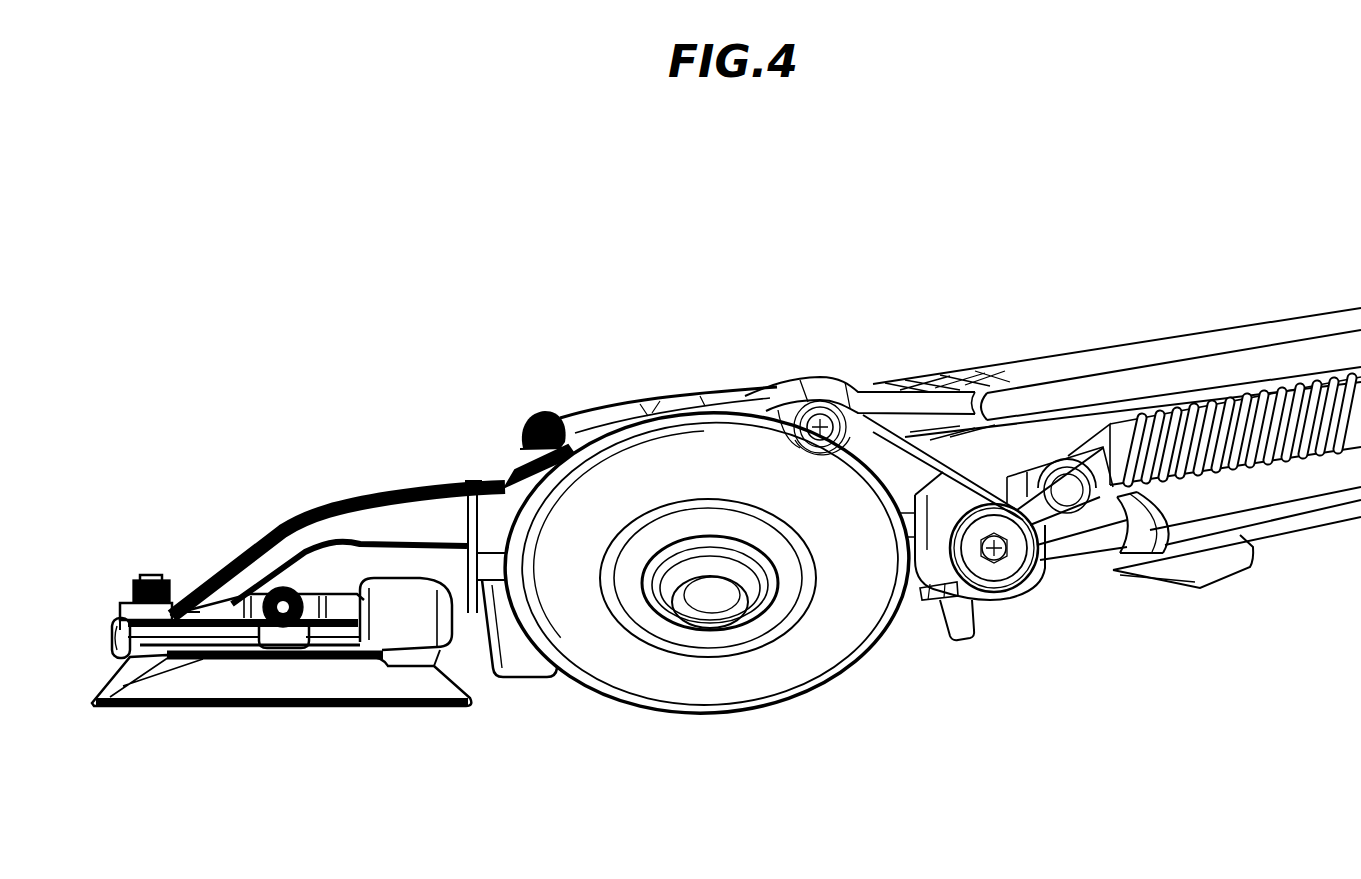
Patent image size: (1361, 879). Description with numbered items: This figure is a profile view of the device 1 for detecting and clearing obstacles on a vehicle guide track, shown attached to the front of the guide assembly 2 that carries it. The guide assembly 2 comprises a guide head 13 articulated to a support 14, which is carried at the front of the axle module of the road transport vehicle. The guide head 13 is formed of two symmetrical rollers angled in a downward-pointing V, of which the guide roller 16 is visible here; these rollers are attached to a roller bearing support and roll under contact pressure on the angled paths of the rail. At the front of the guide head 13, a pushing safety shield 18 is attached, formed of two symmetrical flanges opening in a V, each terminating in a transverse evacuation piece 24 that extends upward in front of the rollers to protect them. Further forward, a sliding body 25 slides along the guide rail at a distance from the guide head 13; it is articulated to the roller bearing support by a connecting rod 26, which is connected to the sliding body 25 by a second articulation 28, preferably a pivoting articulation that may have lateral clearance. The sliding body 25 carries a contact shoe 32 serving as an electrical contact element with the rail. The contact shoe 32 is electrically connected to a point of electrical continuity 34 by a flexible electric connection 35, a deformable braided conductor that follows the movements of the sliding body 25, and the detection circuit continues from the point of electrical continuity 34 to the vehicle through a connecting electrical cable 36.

The device for detecting and clearing obstacles 1 is at (388, 426).
The guide assembly 2 is at (717, 286).
The guide head 13 is at (781, 332).
The support 14 is at (1078, 335).
The guide roller 16 is at (668, 724).
The pushing safety shield 18 is at (519, 690).
The transverse evacuation piece 24 is at (541, 678).
The sliding body 25 is at (256, 768).
The connecting rod 26 is at (380, 530).
The second articulation 28 is at (296, 576).
The contact shoe 32 is at (104, 645).
The point of electrical continuity 34 is at (564, 412).
The flexible electric connection 35 is at (308, 496).
The connecting electrical cable 36 is at (658, 386).